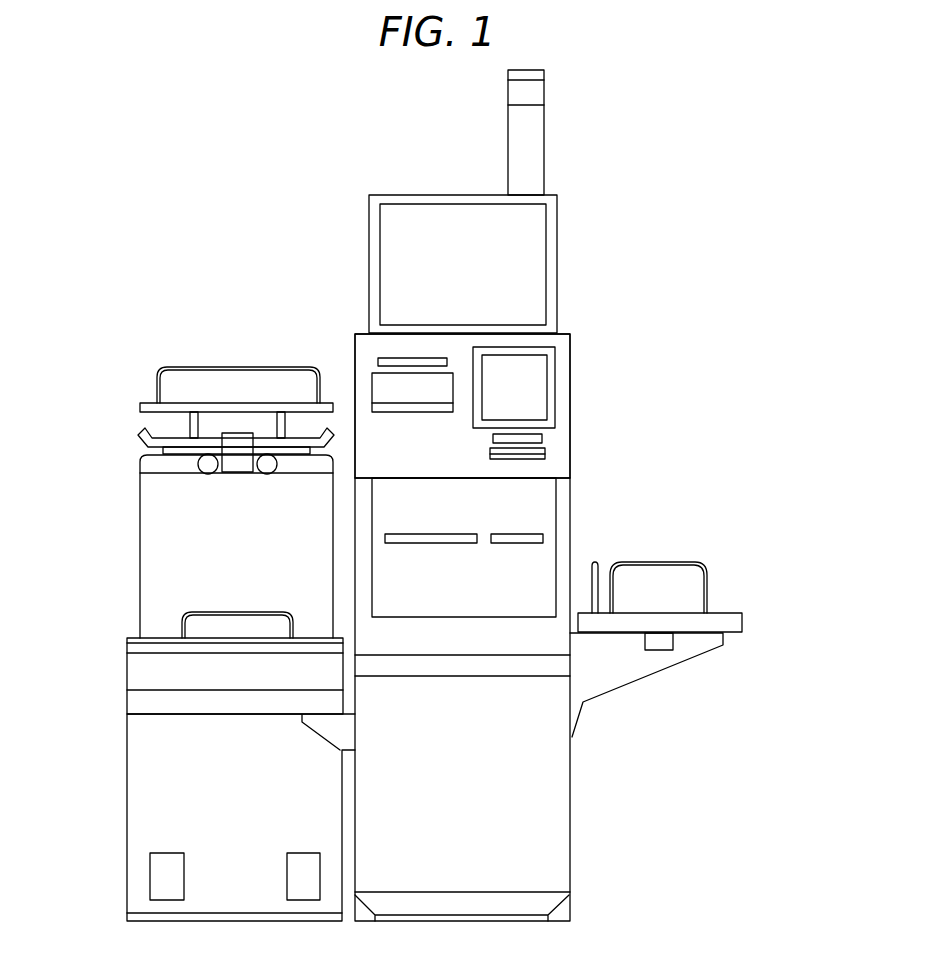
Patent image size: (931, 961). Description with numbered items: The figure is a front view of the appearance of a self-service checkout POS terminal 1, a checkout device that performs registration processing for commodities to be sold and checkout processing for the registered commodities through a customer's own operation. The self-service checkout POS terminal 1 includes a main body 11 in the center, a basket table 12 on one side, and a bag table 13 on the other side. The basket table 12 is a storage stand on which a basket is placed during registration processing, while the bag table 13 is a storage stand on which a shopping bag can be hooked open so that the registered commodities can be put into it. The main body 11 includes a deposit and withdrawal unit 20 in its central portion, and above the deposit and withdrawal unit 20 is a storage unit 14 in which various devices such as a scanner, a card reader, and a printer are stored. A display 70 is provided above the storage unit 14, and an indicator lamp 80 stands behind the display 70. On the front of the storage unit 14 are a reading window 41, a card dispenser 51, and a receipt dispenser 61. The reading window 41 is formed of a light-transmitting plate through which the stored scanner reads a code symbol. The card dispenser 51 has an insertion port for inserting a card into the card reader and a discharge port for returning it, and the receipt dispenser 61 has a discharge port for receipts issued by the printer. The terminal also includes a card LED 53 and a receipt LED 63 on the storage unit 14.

The self-service checkout POS terminal 1 is at (621, 116).
The main body 11 is at (565, 209).
The basket table 12 is at (754, 622).
The bag table 13 is at (116, 656).
The storage unit 14 is at (571, 392).
The deposit and withdrawal unit 20 is at (538, 565).
The reading window 41 is at (531, 366).
The card dispenser 51 is at (546, 453).
The card LED 53 is at (543, 438).
The receipt dispenser 61 is at (382, 402).
The receipt LED 63 is at (405, 356).
The display 70 is at (537, 262).
The indicator lamp 80 is at (519, 137).